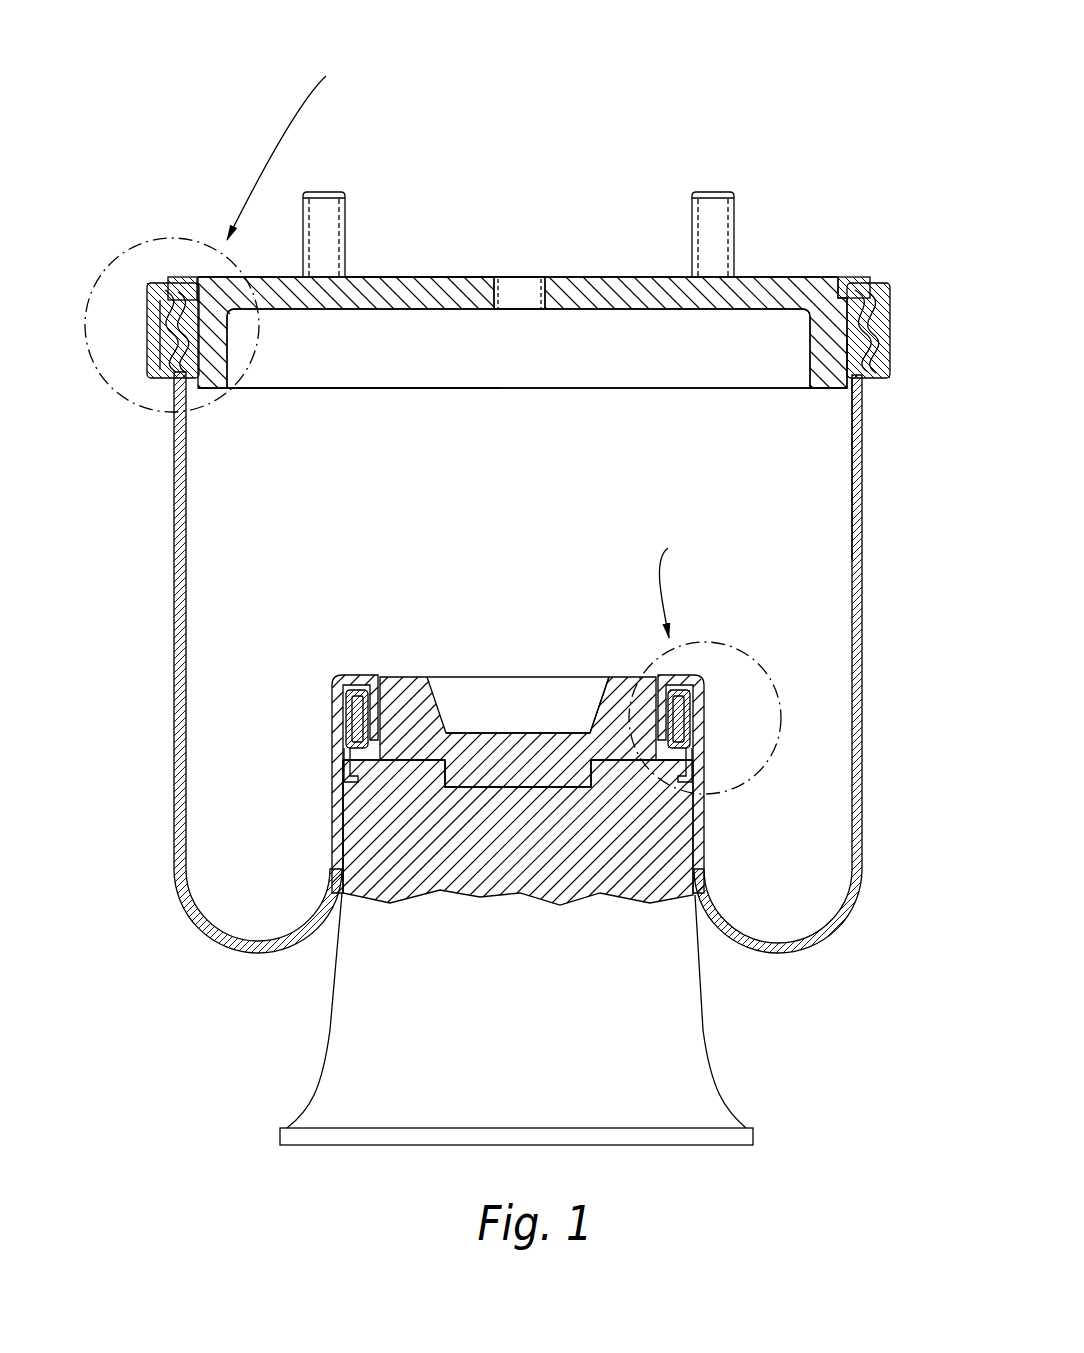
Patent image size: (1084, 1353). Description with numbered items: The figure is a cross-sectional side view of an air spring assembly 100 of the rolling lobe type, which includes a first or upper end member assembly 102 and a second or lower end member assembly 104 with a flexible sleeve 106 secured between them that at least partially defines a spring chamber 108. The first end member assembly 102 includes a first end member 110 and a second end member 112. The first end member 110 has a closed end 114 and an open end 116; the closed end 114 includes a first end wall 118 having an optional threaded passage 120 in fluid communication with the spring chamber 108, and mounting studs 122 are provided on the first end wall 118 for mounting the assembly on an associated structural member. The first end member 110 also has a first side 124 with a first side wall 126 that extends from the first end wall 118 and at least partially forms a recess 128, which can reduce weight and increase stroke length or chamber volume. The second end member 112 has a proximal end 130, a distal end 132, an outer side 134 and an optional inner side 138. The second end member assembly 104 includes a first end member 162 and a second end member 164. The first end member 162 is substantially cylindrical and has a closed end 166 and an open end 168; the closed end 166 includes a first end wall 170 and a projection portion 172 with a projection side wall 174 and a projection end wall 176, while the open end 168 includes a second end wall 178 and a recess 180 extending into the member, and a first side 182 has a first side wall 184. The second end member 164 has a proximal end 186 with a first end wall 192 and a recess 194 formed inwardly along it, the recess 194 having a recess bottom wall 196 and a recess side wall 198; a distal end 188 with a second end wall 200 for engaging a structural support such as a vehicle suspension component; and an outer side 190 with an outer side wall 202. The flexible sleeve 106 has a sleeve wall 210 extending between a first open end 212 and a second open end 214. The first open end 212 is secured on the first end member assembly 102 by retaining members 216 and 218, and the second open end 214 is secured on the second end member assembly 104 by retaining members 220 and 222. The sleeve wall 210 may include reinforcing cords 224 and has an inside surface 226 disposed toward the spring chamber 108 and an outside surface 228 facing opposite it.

The air spring assembly 100 is at (614, 84).
The first end member assembly 102 is at (763, 272).
The second end member assembly 104 is at (418, 661).
The flexible sleeve 106 is at (171, 690).
The spring chamber 108 is at (511, 543).
The first end member 110 is at (604, 271).
The second end member 112 is at (863, 278).
The closed end 114 is at (373, 275).
The open end 116 is at (396, 390).
The first end wall 118 is at (441, 277).
The threaded passage 120 is at (513, 291).
The mounting studs 122 is at (337, 224).
The first side 124 is at (801, 353).
The first side wall 126 is at (830, 366).
The recess 128 is at (482, 378).
The proximal end 130 is at (882, 297).
The distal end 132 is at (181, 275).
The outer side 134 is at (151, 289).
The inner side 138 is at (845, 280).
The first end member 162 is at (400, 673).
The second end member 164 is at (326, 1043).
The closed end 166 is at (344, 819).
The open end 168 is at (376, 668).
The first end wall 170 is at (428, 778).
The projection portion 172 is at (472, 790).
The projection side wall 174 is at (590, 790).
The projection end wall 176 is at (541, 772).
The second end wall 178 is at (629, 690).
The recess 180 is at (511, 690).
The first side 182 is at (401, 744).
The first side wall 184 is at (398, 716).
The proximal end 186 is at (657, 818).
The distal end 188 is at (770, 1115).
The outer side 190 is at (704, 987).
The first end wall 192 is at (622, 760).
The recess 194 is at (612, 810).
The recess bottom wall 196 is at (512, 790).
The recess side wall 198 is at (612, 800).
The second end wall 200 is at (689, 1146).
The outer side wall 202 is at (663, 1028).
The sleeve wall 210 is at (174, 562).
The first open end 212 is at (170, 388).
The second open end 214 is at (703, 668).
The retaining member 216 is at (164, 353).
The retaining member 218 is at (147, 352).
The retaining member 220 is at (674, 717).
The retaining member 222 is at (699, 734).
The reinforcing cords 224 is at (863, 573).
The inside surface 226 is at (852, 453).
The outside surface 228 is at (863, 669).